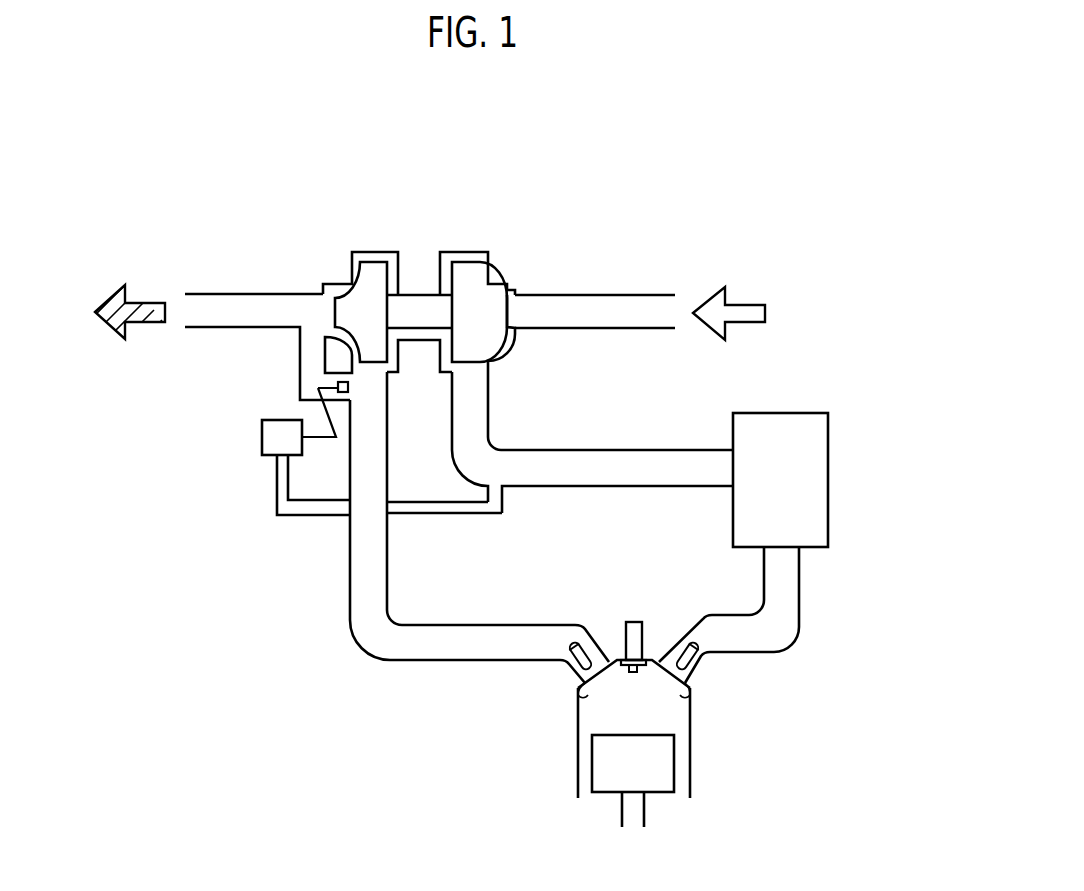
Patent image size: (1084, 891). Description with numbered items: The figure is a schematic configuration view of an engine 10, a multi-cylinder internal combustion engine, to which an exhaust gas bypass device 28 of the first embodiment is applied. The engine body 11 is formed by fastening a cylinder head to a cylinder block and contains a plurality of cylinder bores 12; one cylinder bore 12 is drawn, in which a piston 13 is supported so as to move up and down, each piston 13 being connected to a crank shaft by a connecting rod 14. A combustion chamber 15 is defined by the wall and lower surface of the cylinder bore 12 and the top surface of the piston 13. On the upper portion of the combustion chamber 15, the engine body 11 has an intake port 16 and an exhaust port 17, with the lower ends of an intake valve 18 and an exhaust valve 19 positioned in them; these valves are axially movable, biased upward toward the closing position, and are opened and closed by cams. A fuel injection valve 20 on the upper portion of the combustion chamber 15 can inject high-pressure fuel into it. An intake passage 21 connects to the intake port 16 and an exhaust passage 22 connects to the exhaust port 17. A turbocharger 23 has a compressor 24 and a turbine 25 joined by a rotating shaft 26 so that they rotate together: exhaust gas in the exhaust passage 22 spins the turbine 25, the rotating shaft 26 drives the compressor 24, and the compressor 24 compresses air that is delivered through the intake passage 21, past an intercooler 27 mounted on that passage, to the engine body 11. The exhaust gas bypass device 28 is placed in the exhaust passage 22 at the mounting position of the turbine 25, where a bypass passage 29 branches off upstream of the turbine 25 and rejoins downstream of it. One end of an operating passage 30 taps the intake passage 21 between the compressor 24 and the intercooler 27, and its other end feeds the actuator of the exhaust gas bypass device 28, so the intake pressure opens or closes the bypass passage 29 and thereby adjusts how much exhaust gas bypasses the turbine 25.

The engine 10 is at (562, 692).
The engine body 11 is at (692, 763).
The cylinder bore 12 is at (578, 720).
The piston 13 is at (618, 768).
The connecting rod 14 is at (633, 808).
The combustion chamber 15 is at (662, 720).
The intake port 16 is at (690, 686).
The exhaust port 17 is at (580, 688).
The intake valve 18 is at (697, 622).
The exhaust valve 19 is at (572, 623).
The fuel injection valve 20 is at (633, 620).
The intake passage 21 is at (800, 571).
The exhaust passage 22 is at (350, 565).
The turbocharger 23 is at (516, 298).
The compressor 24 is at (475, 292).
The turbine 25 is at (368, 292).
The rotating shaft 26 is at (413, 308).
The intercooler 27 is at (811, 411).
The exhaust gas bypass device 28 is at (243, 439).
The bypass passage 29 is at (310, 348).
The operating passage 30 is at (273, 492).